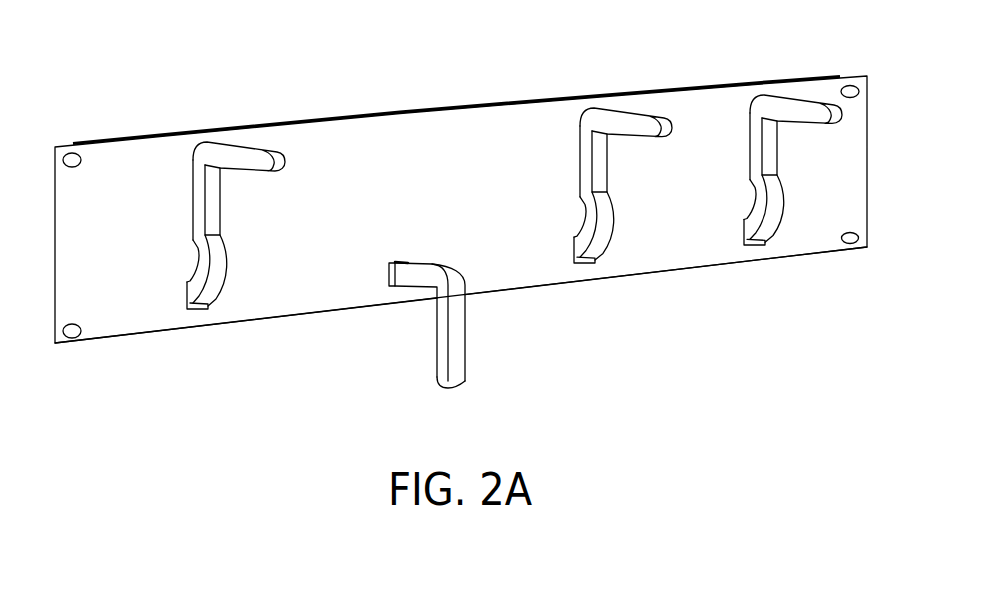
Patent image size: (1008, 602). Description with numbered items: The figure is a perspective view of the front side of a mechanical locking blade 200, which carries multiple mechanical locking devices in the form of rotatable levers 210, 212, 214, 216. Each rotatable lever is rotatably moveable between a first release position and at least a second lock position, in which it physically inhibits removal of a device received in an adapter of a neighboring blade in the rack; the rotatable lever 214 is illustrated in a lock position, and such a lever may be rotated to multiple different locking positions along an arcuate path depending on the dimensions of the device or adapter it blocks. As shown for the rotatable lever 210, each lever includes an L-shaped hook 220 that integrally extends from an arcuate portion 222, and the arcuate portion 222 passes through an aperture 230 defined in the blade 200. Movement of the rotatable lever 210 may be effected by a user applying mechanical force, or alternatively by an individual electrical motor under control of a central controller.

The blade 200 is at (168, 68).
The rotatable lever 210 is at (796, 172).
The rotatable lever 212 is at (661, 132).
The rotatable lever 214 is at (458, 380).
The rotatable lever 216 is at (278, 168).
The L-shaped hook 220 is at (783, 93).
The arcuate portion 222 is at (775, 210).
The aperture 230 is at (753, 245).